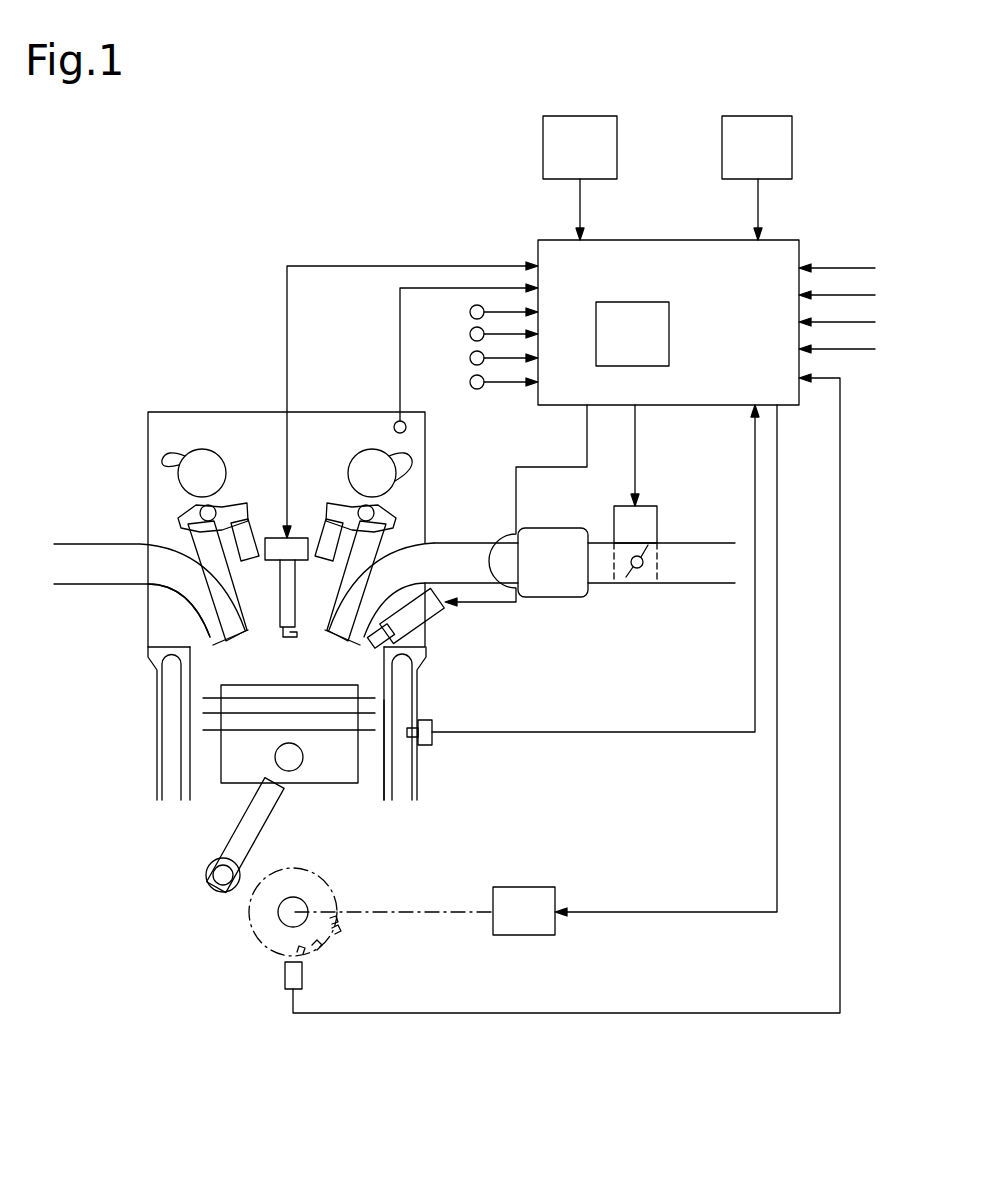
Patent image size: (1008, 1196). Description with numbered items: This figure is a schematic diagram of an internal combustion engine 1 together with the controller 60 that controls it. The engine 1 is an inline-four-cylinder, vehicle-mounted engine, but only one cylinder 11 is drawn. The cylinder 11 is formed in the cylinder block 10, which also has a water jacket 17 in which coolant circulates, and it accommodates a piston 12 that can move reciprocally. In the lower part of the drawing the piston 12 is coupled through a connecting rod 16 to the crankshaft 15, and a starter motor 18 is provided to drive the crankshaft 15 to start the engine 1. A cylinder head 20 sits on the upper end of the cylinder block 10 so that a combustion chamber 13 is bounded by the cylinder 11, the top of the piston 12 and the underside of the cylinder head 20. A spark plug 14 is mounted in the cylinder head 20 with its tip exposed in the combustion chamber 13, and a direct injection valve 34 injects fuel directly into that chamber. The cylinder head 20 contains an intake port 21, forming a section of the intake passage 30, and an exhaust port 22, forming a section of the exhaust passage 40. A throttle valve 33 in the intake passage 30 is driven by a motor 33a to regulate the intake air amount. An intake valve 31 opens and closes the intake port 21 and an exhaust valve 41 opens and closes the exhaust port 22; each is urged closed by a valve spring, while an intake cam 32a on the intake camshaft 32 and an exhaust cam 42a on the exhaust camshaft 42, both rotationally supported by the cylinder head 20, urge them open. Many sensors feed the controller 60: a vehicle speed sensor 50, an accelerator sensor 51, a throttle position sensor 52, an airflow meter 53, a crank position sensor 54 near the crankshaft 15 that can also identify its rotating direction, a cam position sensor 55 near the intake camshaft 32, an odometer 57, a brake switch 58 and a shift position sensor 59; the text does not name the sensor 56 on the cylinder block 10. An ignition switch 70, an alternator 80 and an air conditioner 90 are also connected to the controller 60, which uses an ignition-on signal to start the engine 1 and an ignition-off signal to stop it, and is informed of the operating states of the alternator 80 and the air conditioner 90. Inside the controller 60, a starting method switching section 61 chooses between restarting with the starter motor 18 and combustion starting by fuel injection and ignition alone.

The internal combustion engine 1 is at (49, 700).
The cylinder block 10 is at (148, 721).
The cylinder 11 is at (383, 787).
The piston 12 is at (314, 685).
The combustion chamber 13 is at (265, 675).
The spark plug 14 is at (282, 596).
The crankshaft 15 is at (280, 918).
The connecting rod 16 is at (266, 826).
The water jacket 17 is at (404, 772).
The starter motor 18 is at (523, 887).
The cylinder head 20 is at (148, 491).
The intake port 21 is at (396, 570).
The exhaust port 22 is at (159, 596).
The intake passage 30 is at (460, 542).
The intake valve 31 is at (354, 597).
The intake camshaft 32 is at (352, 461).
The intake cam 32a is at (411, 453).
The throttle valve 33 is at (626, 578).
The motor 33a is at (648, 507).
The direct injection valve 34 is at (440, 627).
The exhaust passage 40 is at (94, 543).
The exhaust valve 41 is at (210, 614).
The exhaust camshaft 42 is at (208, 455).
The exhaust cam 42a is at (174, 460).
The vehicle speed sensor 50 is at (470, 314).
The accelerator sensor 51 is at (470, 336).
The throttle position sensor 52 is at (470, 360).
The airflow meter 53 is at (470, 384).
The crank position sensor 54 is at (302, 973).
The cam position sensor 55 is at (392, 430).
The knock sensor 56 is at (425, 722).
The odometer 57 is at (862, 268).
The brake switch 58 is at (862, 295).
The shift position sensor 59 is at (862, 322).
The controller 60 is at (670, 240).
The starting method switching section 61 is at (669, 334).
The ignition switch 70 is at (862, 349).
The alternator 80 is at (792, 148).
The air conditioner 90 is at (617, 148).